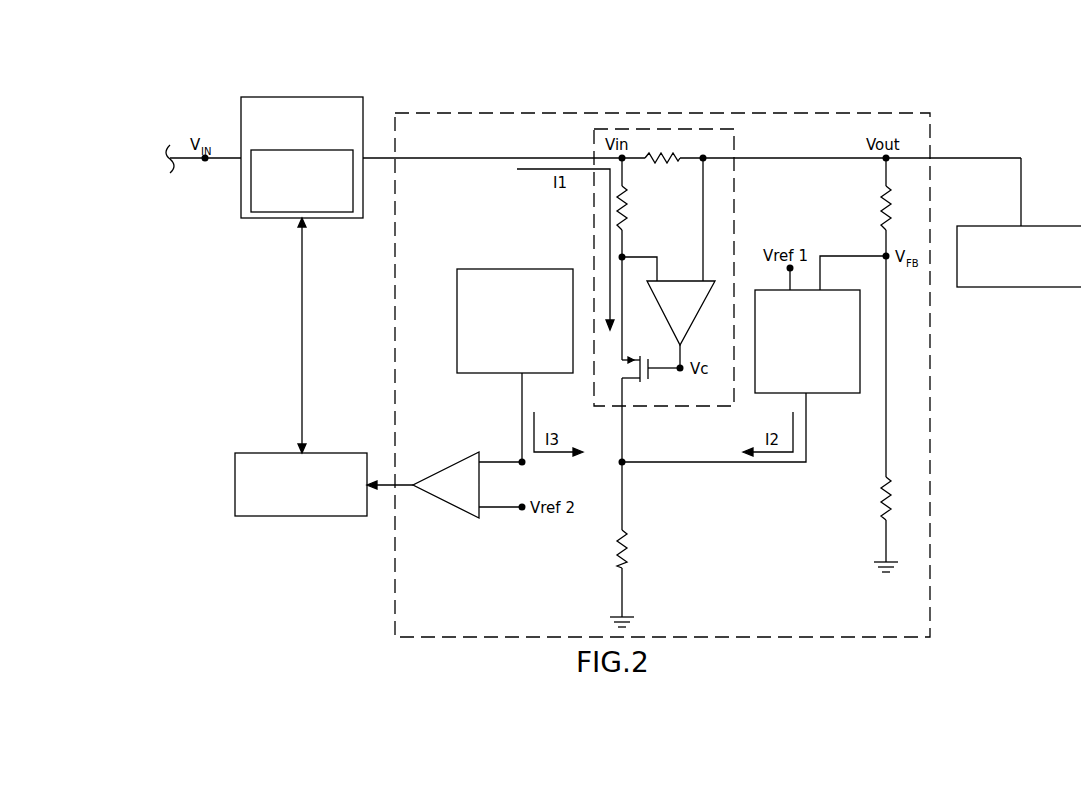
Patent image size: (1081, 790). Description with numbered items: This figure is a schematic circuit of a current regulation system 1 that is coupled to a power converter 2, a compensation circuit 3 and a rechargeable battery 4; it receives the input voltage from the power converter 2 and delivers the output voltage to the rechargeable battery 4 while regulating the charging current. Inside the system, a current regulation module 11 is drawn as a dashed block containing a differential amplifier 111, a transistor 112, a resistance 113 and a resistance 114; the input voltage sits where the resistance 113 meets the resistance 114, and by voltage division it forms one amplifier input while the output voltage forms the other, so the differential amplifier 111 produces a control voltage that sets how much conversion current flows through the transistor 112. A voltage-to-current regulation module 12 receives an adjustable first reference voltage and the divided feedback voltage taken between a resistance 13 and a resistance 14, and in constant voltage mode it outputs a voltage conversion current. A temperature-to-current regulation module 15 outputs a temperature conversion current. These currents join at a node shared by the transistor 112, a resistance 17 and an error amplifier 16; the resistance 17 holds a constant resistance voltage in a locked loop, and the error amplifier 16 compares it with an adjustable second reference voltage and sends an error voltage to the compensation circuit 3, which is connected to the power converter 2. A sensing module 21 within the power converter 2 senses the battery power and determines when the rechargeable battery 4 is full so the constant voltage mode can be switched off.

The current regulation system 1 is at (930, 438).
The power converter 2 is at (357, 97).
The compensation circuit 3 is at (238, 463).
The rechargeable battery 4 is at (1071, 284).
The current regulation module 11 is at (706, 126).
The voltage-to-current regulation module 12 is at (852, 396).
The resistance 13 is at (880, 204).
The resistance 14 is at (880, 491).
The temperature-to-current regulation module 15 is at (567, 268).
The error amplifier 16 is at (455, 498).
The resistance 17 is at (627, 540).
The sensing module 21 is at (344, 212).
The differential amplifier 111 is at (680, 285).
The transistor 112 is at (632, 382).
The resistance 113 is at (668, 153).
The resistance 114 is at (627, 200).